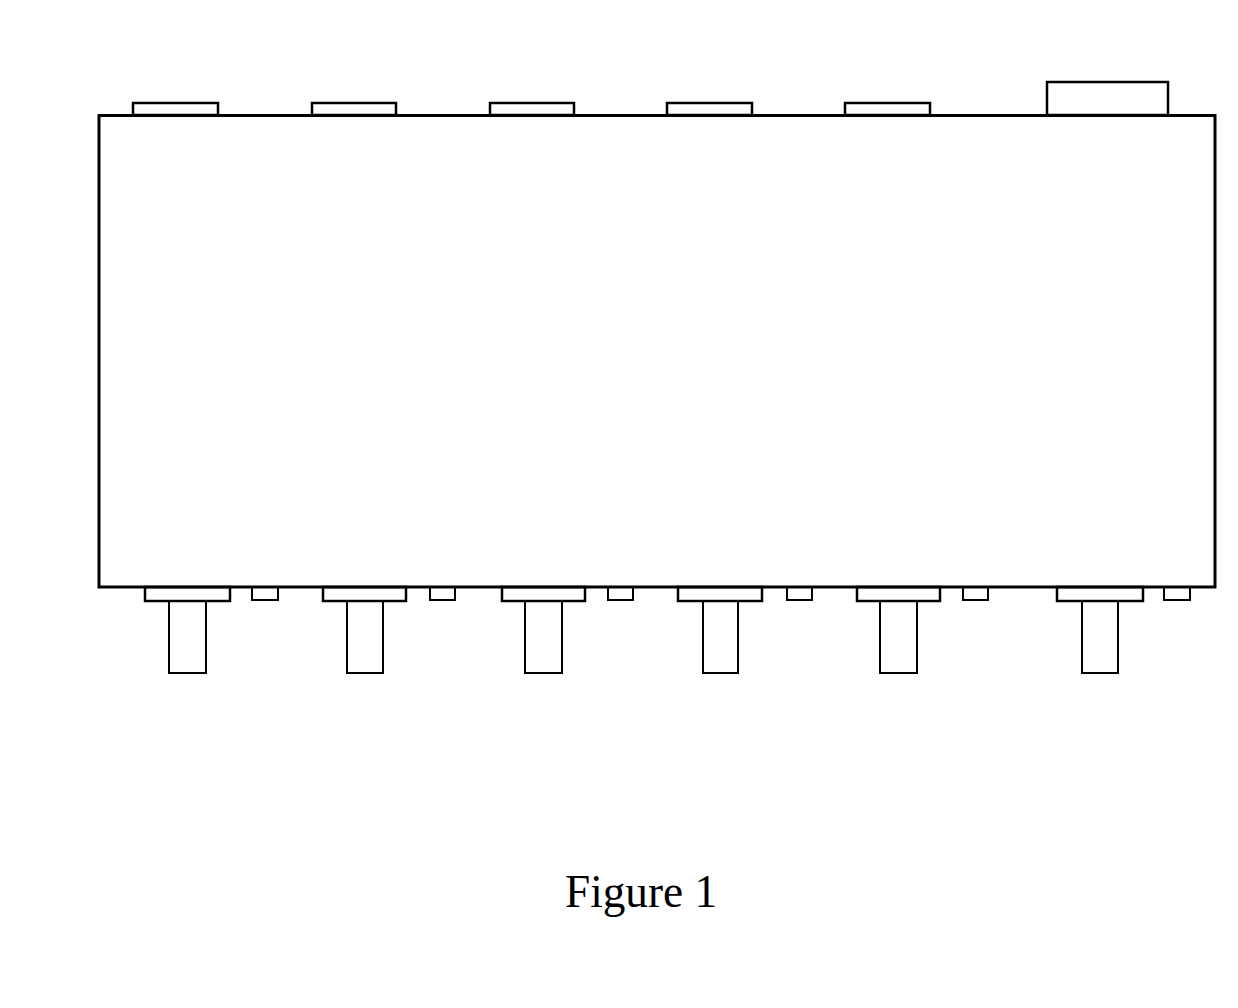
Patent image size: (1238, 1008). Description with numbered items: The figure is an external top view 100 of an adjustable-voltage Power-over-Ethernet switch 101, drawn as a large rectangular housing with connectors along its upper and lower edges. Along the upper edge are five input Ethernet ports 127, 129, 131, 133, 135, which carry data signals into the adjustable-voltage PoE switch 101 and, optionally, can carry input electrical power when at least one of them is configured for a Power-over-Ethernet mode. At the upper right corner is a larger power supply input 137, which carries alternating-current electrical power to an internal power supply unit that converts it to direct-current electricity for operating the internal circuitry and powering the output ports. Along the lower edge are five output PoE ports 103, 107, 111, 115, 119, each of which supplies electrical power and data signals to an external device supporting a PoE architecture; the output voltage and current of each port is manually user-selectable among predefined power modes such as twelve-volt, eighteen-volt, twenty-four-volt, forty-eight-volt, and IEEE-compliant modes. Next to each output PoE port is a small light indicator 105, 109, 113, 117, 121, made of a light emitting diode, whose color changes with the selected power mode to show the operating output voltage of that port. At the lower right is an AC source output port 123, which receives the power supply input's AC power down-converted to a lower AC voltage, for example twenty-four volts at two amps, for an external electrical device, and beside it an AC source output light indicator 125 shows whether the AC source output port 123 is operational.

The external top view 100 is at (599, 798).
The adjustable-voltage Power-over-Ethernet (PoE) switch 101 is at (657, 352).
The output PoE port 103 is at (187, 606).
The light indicator 105 is at (261, 569).
The output PoE port 107 is at (364, 606).
The light indicator 109 is at (440, 569).
The output PoE port 111 is at (543, 606).
The light indicator 113 is at (619, 569).
The output PoE port 115 is at (720, 606).
The light indicator 117 is at (794, 569).
The output PoE port 119 is at (898, 606).
The light indicator 121 is at (971, 569).
The AC source output port 123 is at (1100, 606).
The AC source output light indicator 125 is at (1174, 569).
The input Ethernet port 127 is at (175, 87).
The input Ethernet port 129 is at (354, 87).
The input Ethernet port 131 is at (532, 87).
The input Ethernet port 133 is at (709, 87).
The input Ethernet port 135 is at (887, 87).
The power supply input 137 is at (1107, 74).